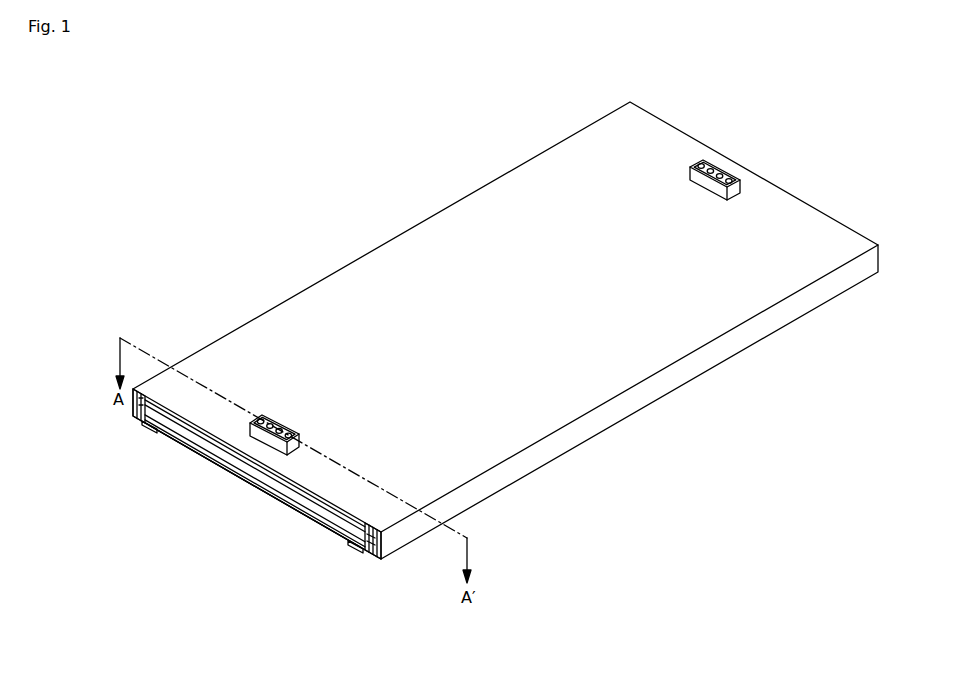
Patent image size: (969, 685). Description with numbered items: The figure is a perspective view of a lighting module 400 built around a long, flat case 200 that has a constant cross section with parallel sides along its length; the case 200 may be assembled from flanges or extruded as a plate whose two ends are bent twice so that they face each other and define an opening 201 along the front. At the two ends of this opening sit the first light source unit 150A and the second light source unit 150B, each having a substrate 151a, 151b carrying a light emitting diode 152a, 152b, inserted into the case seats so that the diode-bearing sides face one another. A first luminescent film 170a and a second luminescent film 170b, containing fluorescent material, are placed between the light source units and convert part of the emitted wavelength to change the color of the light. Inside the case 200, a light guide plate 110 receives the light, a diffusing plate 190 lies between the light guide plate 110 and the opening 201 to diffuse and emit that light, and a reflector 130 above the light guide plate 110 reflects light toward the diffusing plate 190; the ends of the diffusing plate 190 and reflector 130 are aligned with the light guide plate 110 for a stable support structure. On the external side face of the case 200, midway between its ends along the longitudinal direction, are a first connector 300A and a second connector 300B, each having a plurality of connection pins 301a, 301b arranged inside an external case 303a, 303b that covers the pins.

The lighting module 400 is at (236, 161).
The case 200 is at (420, 222).
The light guide plate 110 is at (298, 500).
The reflector 130 is at (193, 433).
The diffusing plate 190 is at (213, 458).
The opening 201 is at (258, 490).
The first light source unit 150A is at (403, 603).
The substrate 151a is at (376, 557).
The light emitting diode 152a is at (366, 558).
The first luminescent film 170a is at (363, 549).
The second light source unit 150B is at (73, 433).
The substrate 151b is at (134, 410).
The light emitting diode 152b is at (142, 425).
The second luminescent film 170b is at (143, 428).
The first connector 300A is at (345, 380).
The connection pins 301a is at (263, 417).
The external case 303a is at (298, 432).
The second connector 300B is at (788, 121).
The connection pins 301b is at (705, 160).
The external case 303b is at (742, 172).